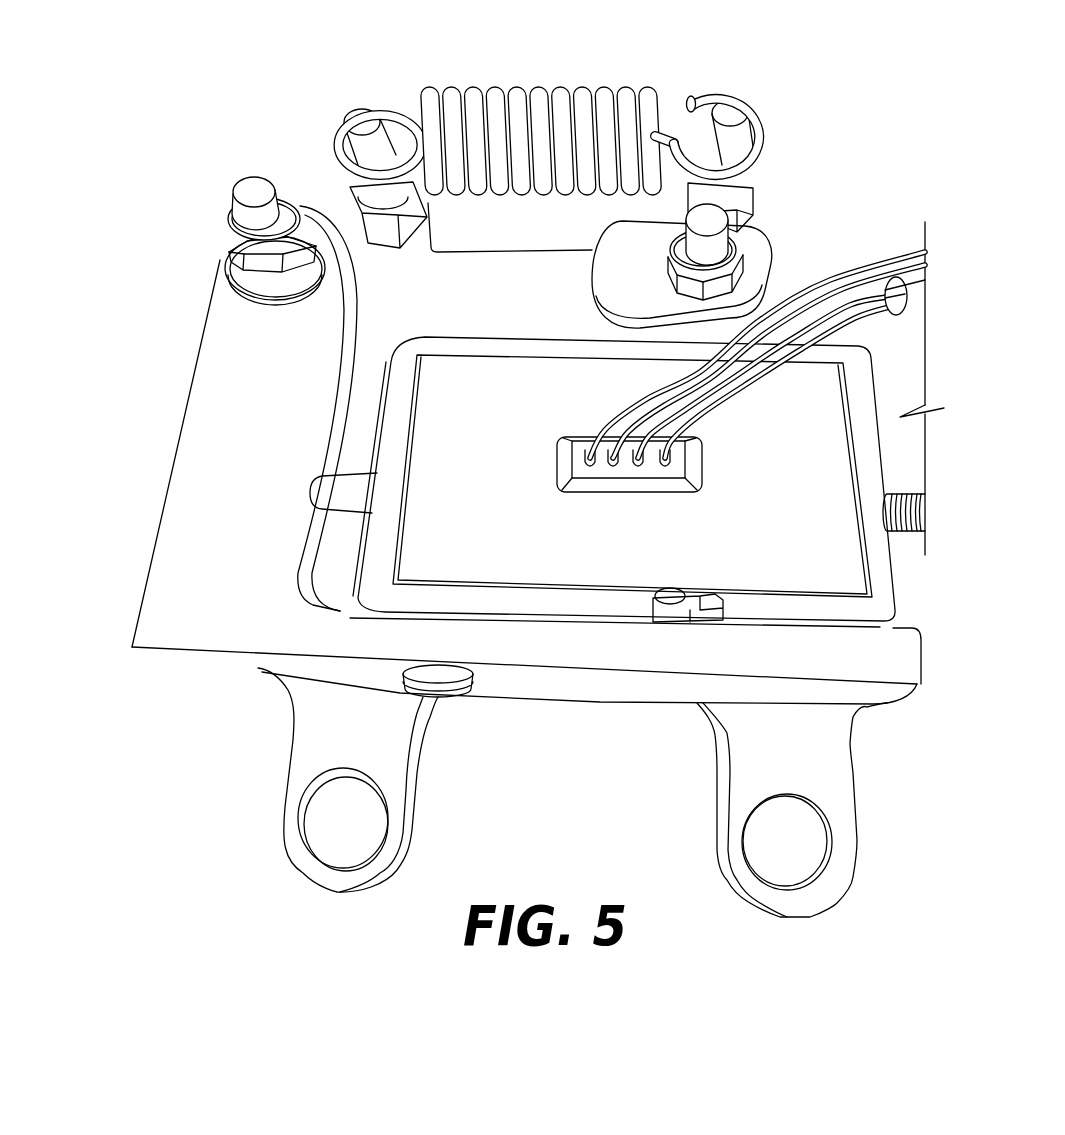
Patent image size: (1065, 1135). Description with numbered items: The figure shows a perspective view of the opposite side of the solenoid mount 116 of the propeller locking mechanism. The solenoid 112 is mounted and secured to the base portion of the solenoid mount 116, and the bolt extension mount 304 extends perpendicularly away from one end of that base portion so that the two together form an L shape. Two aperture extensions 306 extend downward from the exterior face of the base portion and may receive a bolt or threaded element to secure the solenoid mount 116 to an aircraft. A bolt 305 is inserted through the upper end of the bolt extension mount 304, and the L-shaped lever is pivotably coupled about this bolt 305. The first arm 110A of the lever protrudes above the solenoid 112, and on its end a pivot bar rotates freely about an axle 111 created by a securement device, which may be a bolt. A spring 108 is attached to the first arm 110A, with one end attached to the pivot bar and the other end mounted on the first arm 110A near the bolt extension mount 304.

The spring 108 is at (626, 107).
The first arm 110A is at (553, 272).
The axle 111 is at (745, 238).
The solenoid 112 is at (447, 473).
The solenoid mount 116 is at (955, 763).
The bolt extension mount 304 is at (215, 393).
The bolt 305 is at (230, 222).
The aperture extensions 306 is at (308, 757).